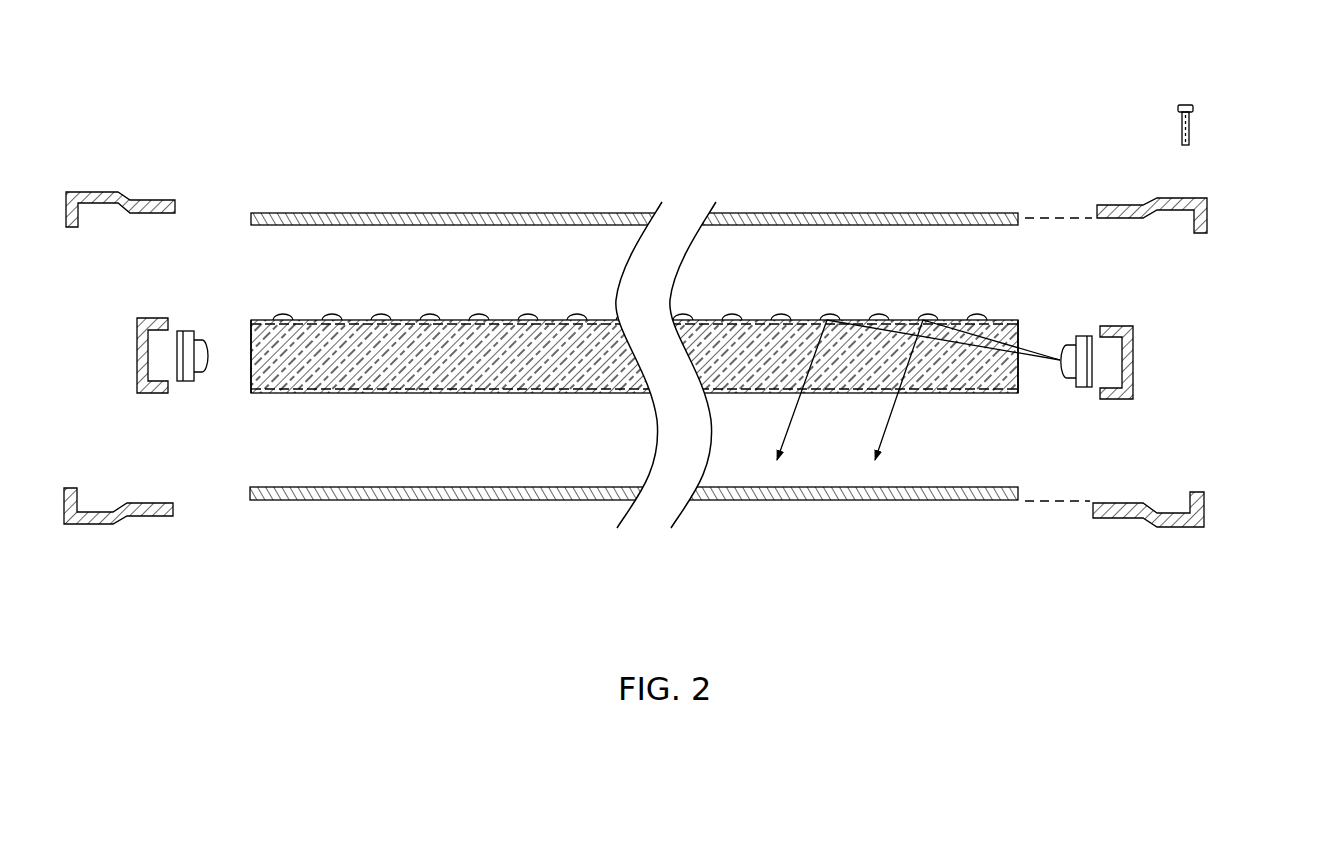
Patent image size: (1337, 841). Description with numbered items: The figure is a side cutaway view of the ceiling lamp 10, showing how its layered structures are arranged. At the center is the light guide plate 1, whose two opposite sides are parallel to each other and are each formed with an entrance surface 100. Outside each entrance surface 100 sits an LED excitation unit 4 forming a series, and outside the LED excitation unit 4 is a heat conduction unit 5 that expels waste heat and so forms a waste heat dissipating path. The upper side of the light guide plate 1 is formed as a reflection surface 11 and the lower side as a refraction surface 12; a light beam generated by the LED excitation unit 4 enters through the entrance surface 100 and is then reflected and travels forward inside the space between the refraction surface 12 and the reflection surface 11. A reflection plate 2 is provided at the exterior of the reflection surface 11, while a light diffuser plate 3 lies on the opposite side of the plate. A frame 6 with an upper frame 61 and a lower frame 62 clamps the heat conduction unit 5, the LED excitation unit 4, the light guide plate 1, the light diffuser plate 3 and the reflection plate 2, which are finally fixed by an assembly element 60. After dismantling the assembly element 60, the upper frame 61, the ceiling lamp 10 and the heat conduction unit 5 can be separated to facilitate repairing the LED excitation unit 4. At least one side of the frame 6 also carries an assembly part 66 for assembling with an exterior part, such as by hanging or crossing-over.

The ceiling lamp 10 is at (908, 100).
The frame 6 is at (127, 162).
The upper frame 61 is at (1207, 213).
The lower frame 62 is at (1205, 510).
The assembly part 66 is at (1158, 545).
The assembly element 60 is at (1185, 103).
The reflection plate 2 is at (787, 213).
The light diffuser plate 3 is at (850, 500).
The light guide plate 1 is at (648, 353).
The reflection surface 11 is at (438, 320).
The refraction surface 12 is at (420, 393).
The entrance surface 100 is at (250, 350).
The LED excitation unit 4 is at (187, 382).
The heat conduction unit 5 is at (1133, 345).